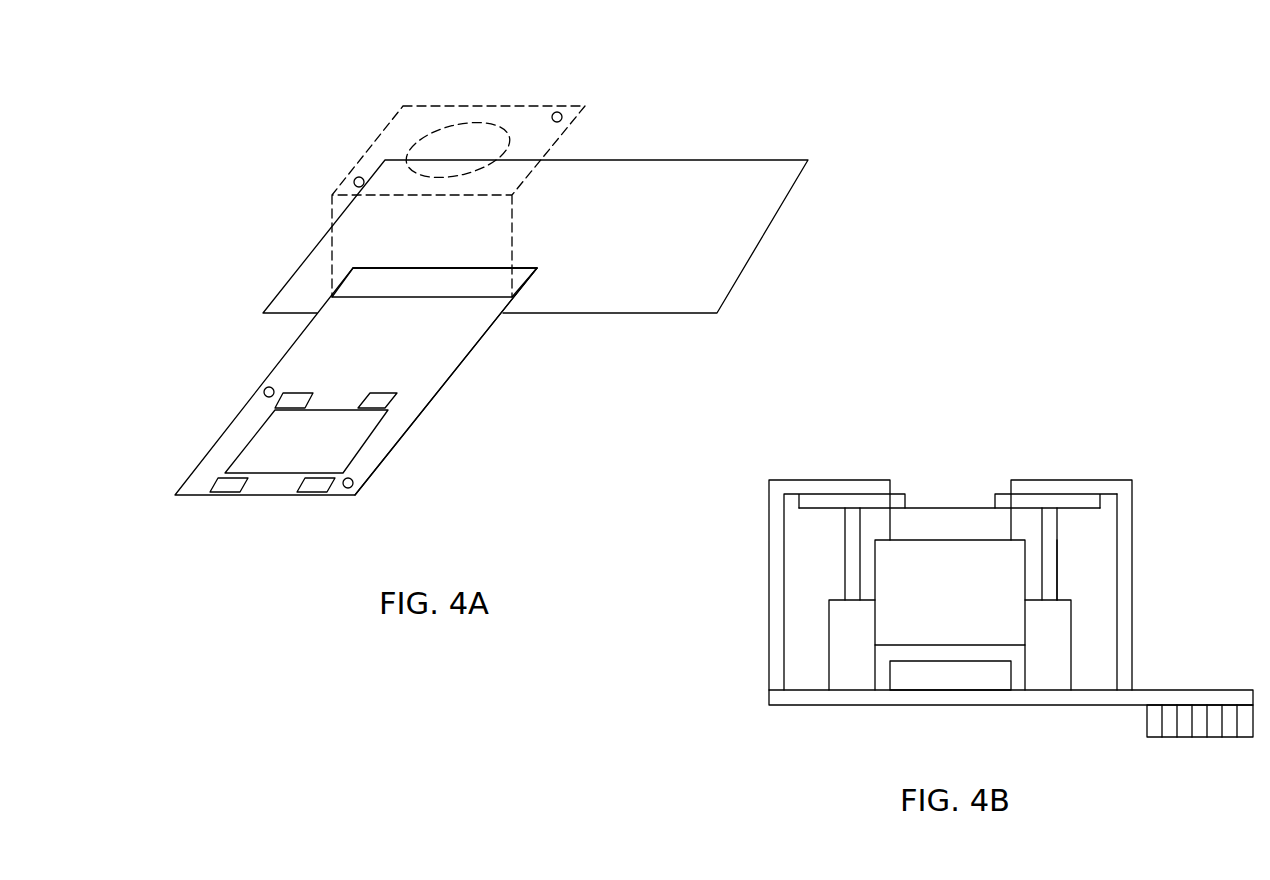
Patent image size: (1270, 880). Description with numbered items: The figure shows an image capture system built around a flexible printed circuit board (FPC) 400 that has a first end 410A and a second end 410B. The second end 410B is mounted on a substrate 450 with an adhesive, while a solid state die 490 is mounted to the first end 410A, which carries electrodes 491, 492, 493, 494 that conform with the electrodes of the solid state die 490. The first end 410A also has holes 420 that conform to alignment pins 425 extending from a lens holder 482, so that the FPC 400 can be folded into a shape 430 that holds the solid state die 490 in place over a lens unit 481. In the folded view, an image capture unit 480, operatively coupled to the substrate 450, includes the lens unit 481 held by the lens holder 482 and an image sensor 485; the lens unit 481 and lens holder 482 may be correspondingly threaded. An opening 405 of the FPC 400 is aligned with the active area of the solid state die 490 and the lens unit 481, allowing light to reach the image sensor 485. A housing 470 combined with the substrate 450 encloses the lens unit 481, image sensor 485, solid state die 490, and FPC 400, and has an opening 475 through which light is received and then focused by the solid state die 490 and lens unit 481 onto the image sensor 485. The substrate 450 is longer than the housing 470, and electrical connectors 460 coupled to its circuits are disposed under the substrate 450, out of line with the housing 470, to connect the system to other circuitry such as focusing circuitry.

In FIG. 4A, the flexible printed circuit board 400 is at (379, 339).
In FIG. 4B, the flexible printed circuit board 400 is at (1100, 508).
In FIG. 4A, the opening 405 is at (485, 123).
In FIG. 4B, the opening 405 is at (990, 500).
In FIG. 4A, the first end 410A is at (382, 440).
In FIG. 4A, the second end 410B is at (535, 268).
In FIG. 4A, the holes 420 is at (265, 393).
In FIG. 4B, the holes 420 is at (1048, 500).
In FIG. 4B, the alignment pins 425 is at (1053, 560).
In FIG. 4A, the shape 430 is at (555, 138).
In FIG. 4A, the substrate 450 is at (680, 259).
In FIG. 4B, the substrate 450 is at (777, 707).
In FIG. 4B, the electrical connectors 460 is at (1232, 735).
In FIG. 4B, the housing 470 is at (1113, 480).
In FIG. 4B, the opening 475 is at (905, 483).
In FIG. 4B, the image capture unit 480 is at (1062, 335).
In FIG. 4B, the lens unit 481 is at (933, 606).
In FIG. 4B, the lens holder 482 is at (1068, 650).
In FIG. 4B, the image sensor 485 is at (933, 686).
In FIG. 4A, the solid state die 490 is at (293, 446).
In FIG. 4B, the solid state die 490 is at (933, 539).
In FIG. 4A, the electrode 491 is at (395, 393).
In FIG. 4A, the electrode 492 is at (327, 482).
In FIG. 4A, the electrode 493 is at (245, 482).
In FIG. 4A, the electrode 494 is at (300, 393).